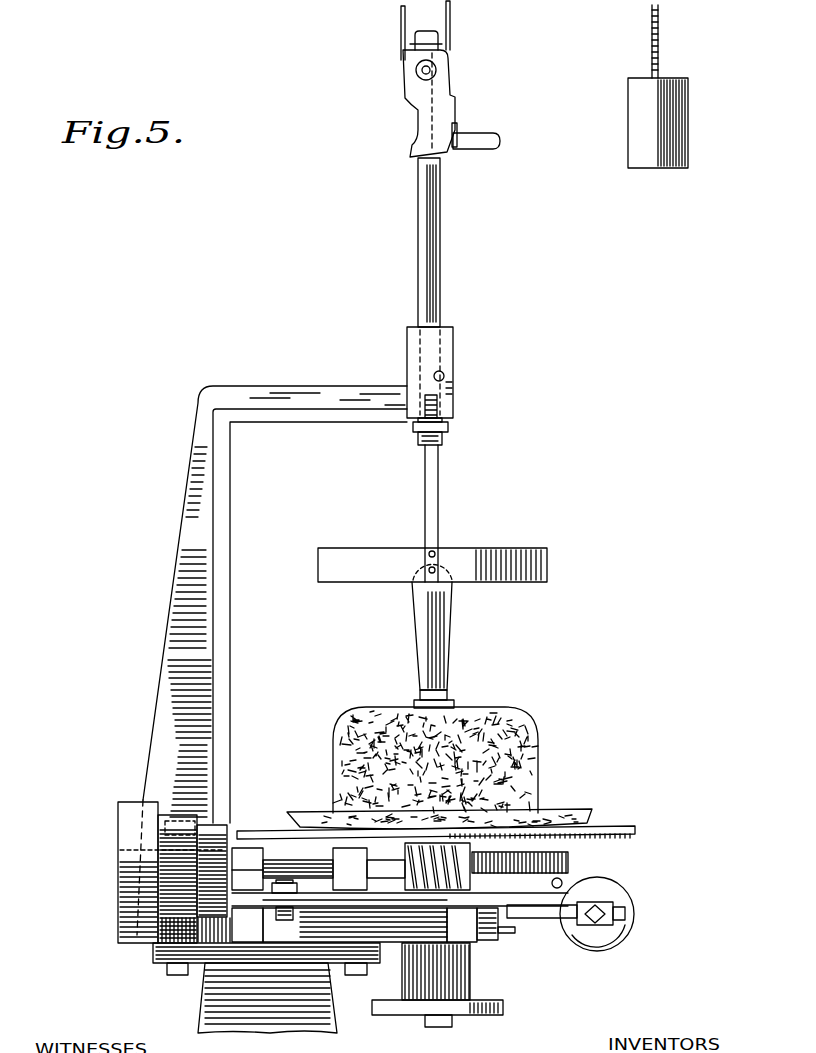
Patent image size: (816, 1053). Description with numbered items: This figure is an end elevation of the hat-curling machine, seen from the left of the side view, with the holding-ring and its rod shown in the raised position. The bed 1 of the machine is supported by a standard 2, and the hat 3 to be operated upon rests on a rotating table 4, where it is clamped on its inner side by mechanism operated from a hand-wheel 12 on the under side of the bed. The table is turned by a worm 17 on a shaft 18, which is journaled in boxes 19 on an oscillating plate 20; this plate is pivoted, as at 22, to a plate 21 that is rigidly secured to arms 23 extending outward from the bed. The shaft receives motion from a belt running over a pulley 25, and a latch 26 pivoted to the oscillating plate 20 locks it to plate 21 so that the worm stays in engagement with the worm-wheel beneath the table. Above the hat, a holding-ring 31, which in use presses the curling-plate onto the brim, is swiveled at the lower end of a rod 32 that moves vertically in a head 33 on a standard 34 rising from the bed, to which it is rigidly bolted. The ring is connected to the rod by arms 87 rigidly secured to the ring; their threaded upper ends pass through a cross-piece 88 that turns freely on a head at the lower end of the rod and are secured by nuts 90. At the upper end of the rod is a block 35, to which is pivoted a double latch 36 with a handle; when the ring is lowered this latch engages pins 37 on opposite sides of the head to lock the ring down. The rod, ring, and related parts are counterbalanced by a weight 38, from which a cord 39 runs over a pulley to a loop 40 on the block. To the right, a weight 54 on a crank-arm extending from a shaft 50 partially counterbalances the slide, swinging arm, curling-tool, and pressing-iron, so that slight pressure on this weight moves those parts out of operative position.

The bed 1 is at (355, 925).
The standard 2 is at (266, 988).
The hat 3 is at (439, 768).
The rotating table 4 is at (618, 822).
The hand-wheel 12 is at (495, 1005).
The worm 17 is at (460, 870).
The shaft 18 is at (295, 862).
The boxes 19 is at (299, 869).
The oscillating plate 20 is at (347, 897).
The plate 21 is at (388, 898).
The pivot 22 is at (288, 906).
The arms 23 is at (373, 925).
The pulley 25 is at (125, 864).
The latch 26 is at (562, 880).
The holding-ring 31 is at (360, 554).
The rod 32 is at (440, 273).
The head 33 is at (412, 357).
The standard 34 is at (304, 417).
The block 35 is at (410, 53).
The double latch 36 is at (427, 86).
The pins 37 is at (446, 376).
The weight 38 is at (658, 123).
The cord 39 is at (650, 56).
The loop 40 is at (448, 39).
The shaft 50 is at (556, 917).
The weight 54 is at (597, 914).
The arms 87 is at (440, 500).
The cross-piece 88 is at (449, 428).
The nuts 90 is at (442, 441).